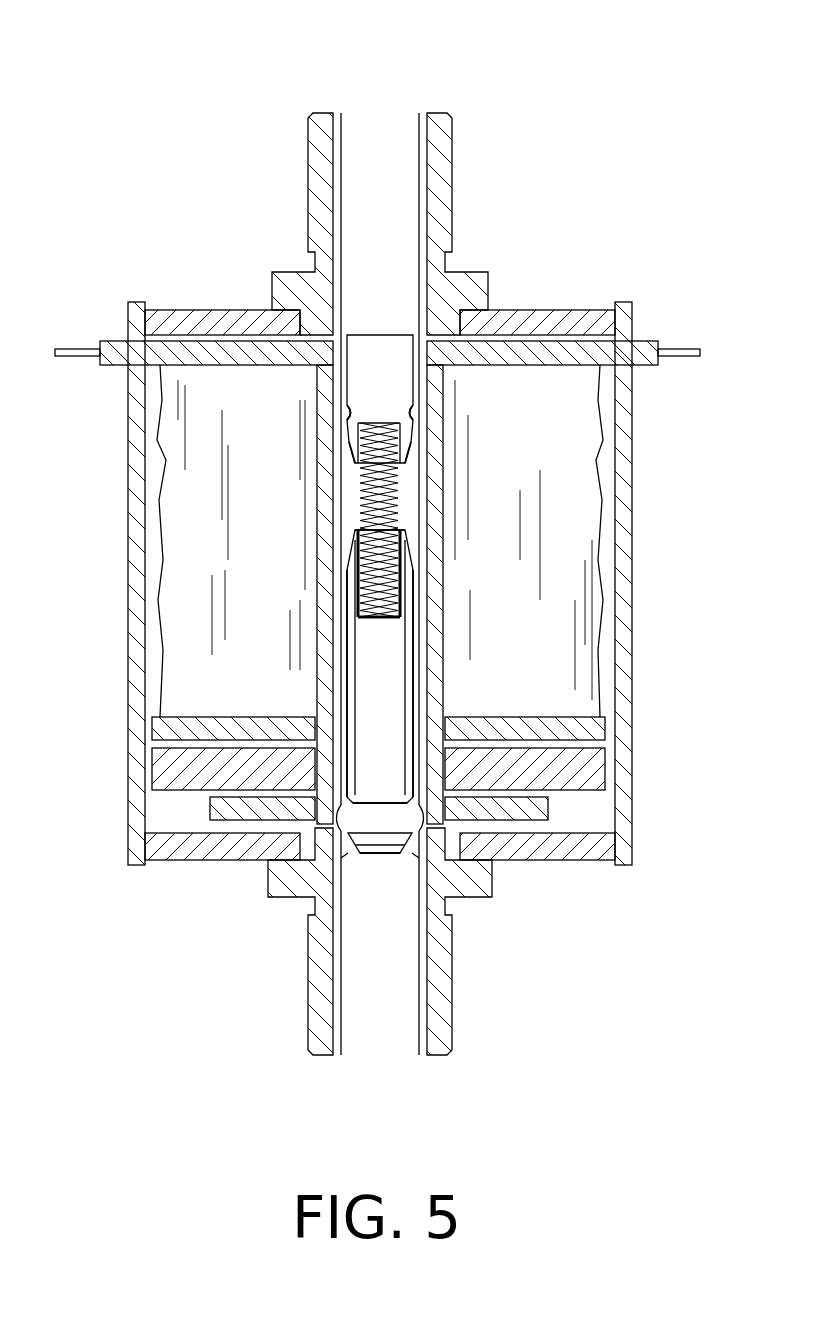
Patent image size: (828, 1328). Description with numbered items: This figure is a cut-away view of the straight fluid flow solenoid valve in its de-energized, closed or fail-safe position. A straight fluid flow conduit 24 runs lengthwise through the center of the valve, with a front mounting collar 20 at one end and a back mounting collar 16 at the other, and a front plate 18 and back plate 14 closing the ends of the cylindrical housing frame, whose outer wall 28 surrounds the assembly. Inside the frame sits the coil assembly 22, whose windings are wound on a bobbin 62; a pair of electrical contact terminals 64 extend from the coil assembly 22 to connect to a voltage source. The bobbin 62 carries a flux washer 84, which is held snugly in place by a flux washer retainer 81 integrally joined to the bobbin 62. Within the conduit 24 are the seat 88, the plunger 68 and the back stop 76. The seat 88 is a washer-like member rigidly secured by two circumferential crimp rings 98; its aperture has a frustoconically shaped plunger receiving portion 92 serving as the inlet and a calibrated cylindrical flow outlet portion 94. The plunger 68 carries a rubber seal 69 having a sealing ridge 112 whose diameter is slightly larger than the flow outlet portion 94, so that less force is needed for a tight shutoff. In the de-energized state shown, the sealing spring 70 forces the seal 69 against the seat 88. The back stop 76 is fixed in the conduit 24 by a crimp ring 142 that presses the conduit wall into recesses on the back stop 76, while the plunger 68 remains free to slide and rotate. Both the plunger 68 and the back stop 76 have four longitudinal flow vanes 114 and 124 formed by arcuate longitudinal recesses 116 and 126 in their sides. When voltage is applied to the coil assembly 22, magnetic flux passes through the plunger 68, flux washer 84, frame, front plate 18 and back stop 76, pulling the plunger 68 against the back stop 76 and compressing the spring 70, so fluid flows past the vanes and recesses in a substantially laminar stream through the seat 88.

The back plate 14 is at (177, 858).
The back mounting collar 16 is at (463, 980).
The front plate 18 is at (208, 310).
The front mounting collar 20 is at (308, 222).
The coil assembly 22 is at (175, 600).
The fluid flow conduit 24 is at (333, 113).
The outer wall 28 is at (126, 470).
The bobbin 62 is at (228, 366).
The electrical contact terminals 64 is at (100, 350).
The plunger 68 is at (383, 636).
The seal 69 is at (397, 820).
The sealing spring 70 is at (397, 500).
The back stop 76 is at (382, 350).
The flux washer retainer 81 is at (247, 820).
The flux washer 84 is at (158, 769).
The seat 88 is at (348, 850).
The plunger receiving portion 92 is at (372, 860).
The flow outlet portion 94 is at (379, 845).
The crimp rings 98 is at (418, 870).
The sealing ridge 112 is at (380, 837).
The flow vanes 114 is at (343, 688).
The longitudinal recesses 116 is at (409, 652).
The flow vanes 124 is at (349, 405).
The longitudinal recesses 126 is at (372, 392).
The crimp ring 142 is at (436, 418).